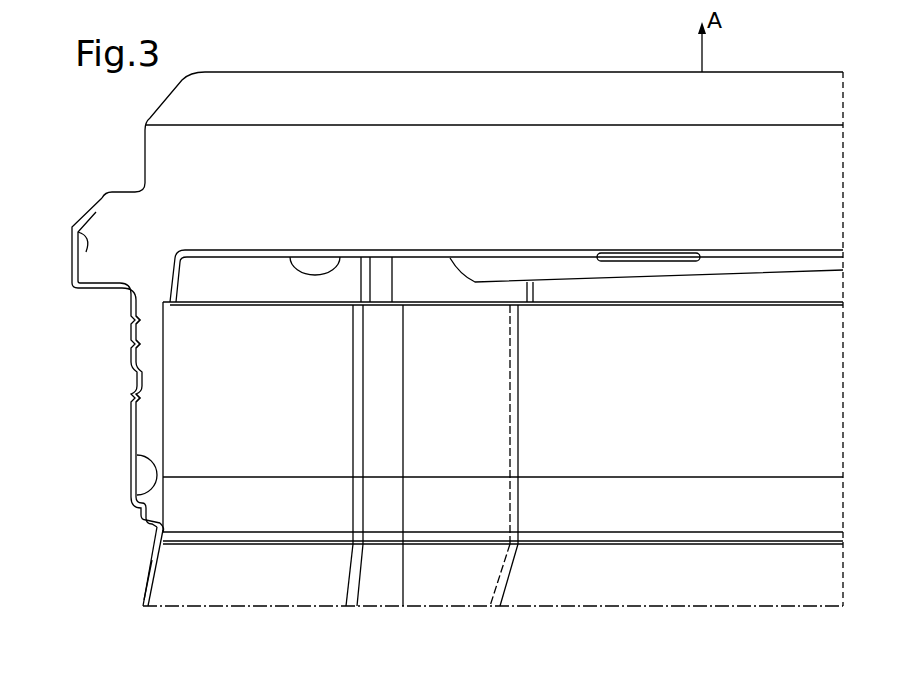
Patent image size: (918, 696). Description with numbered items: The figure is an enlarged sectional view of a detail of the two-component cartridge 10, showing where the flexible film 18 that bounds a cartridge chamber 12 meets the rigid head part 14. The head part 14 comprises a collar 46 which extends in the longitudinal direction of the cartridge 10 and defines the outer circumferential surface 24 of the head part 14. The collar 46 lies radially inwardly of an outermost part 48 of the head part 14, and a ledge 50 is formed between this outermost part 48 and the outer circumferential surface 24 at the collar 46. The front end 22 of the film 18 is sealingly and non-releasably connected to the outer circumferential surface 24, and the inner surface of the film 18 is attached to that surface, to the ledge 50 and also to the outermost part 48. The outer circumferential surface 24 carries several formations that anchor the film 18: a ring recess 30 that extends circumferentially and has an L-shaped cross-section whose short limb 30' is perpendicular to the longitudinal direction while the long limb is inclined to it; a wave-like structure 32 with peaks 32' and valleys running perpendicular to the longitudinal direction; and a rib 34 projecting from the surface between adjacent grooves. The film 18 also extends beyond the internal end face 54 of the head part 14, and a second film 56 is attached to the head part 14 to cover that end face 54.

The two-component cartridge 10 is at (524, 58).
The cartridge chamber 12 is at (602, 432).
The head part 14 is at (508, 182).
The film 18 is at (133, 470).
The front end 22 is at (73, 276).
The outer circumferential surface 24 is at (133, 500).
The ring recess 30 is at (101, 566).
The short limb 30' is at (189, 513).
The wave-like structure 32 is at (91, 395).
The peak 32' is at (90, 310).
The rib 34 is at (133, 398).
The collar 46 is at (175, 364).
The outermost part 48 is at (88, 240).
The ledge 50 is at (110, 283).
The internal end face 54 is at (340, 250).
The second film 56 is at (765, 248).